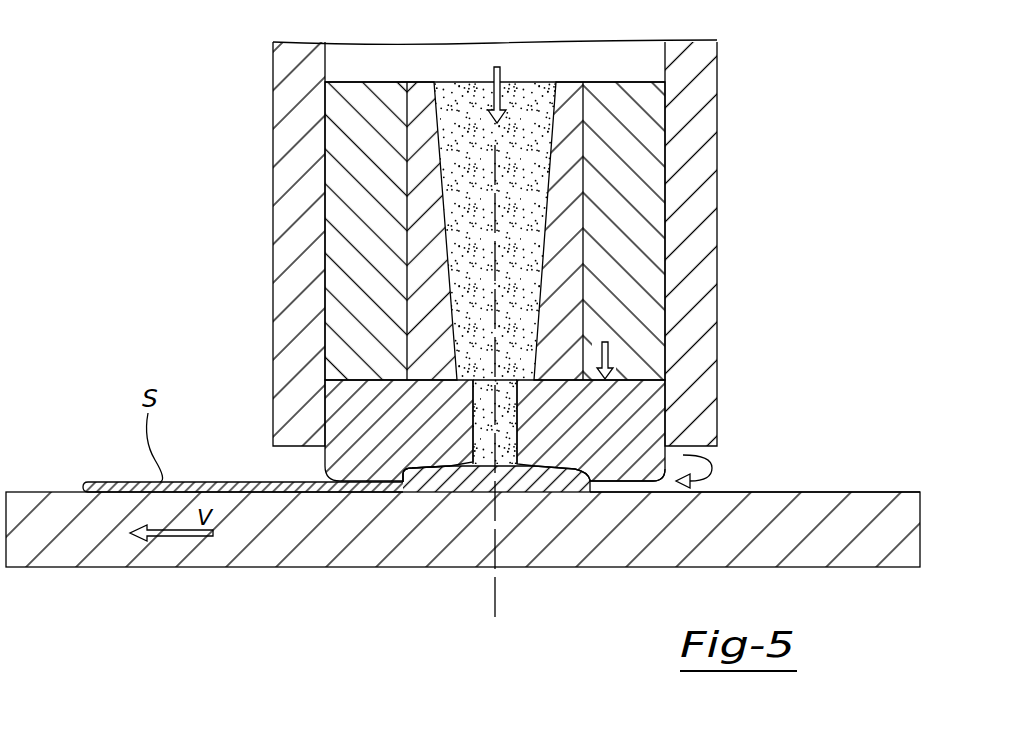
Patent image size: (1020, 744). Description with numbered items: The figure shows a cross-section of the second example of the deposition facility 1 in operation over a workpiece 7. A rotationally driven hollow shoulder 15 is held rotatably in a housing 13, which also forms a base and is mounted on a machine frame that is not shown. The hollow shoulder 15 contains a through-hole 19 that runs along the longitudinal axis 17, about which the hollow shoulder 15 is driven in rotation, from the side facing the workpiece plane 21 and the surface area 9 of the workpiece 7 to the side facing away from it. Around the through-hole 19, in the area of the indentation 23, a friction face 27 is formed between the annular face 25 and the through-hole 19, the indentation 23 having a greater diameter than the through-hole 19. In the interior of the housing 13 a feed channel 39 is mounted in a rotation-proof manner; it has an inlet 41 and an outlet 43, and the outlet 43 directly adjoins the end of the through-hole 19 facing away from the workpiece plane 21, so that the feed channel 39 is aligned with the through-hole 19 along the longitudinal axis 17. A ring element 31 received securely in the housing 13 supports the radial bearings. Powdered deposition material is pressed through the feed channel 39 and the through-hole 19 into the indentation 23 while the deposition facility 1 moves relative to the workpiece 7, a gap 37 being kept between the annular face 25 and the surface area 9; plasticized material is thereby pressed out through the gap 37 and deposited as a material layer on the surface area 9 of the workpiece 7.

The deposition facility 1 is at (499, 240).
The workpiece 7 is at (345, 541).
The surface area 9 is at (835, 492).
The housing 13 is at (695, 133).
The hollow shoulder 15 is at (585, 438).
The longitudinal axis 17 is at (495, 600).
The through-hole 19 is at (473, 420).
The workpiece plane 21 is at (128, 490).
The indentation 23 is at (534, 470).
The annular face 25 is at (637, 481).
The friction face 27 is at (423, 470).
The ring element 31 is at (630, 231).
The gap 37 is at (624, 489).
The feed channel 39 is at (483, 204).
The inlet 41 is at (532, 82).
The outlet 43 is at (490, 383).